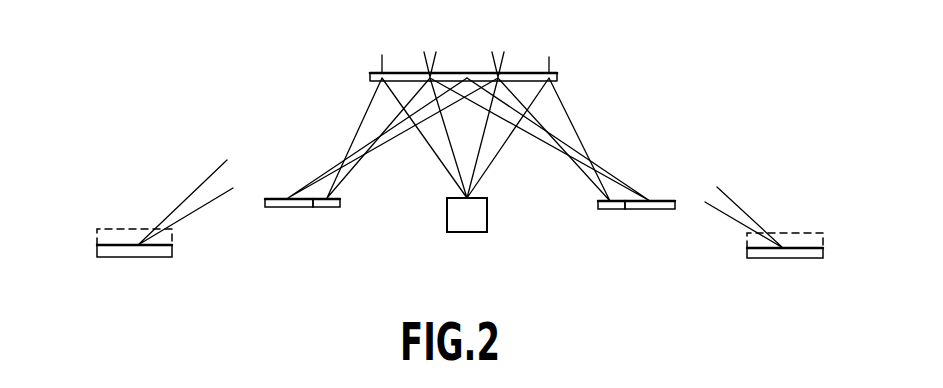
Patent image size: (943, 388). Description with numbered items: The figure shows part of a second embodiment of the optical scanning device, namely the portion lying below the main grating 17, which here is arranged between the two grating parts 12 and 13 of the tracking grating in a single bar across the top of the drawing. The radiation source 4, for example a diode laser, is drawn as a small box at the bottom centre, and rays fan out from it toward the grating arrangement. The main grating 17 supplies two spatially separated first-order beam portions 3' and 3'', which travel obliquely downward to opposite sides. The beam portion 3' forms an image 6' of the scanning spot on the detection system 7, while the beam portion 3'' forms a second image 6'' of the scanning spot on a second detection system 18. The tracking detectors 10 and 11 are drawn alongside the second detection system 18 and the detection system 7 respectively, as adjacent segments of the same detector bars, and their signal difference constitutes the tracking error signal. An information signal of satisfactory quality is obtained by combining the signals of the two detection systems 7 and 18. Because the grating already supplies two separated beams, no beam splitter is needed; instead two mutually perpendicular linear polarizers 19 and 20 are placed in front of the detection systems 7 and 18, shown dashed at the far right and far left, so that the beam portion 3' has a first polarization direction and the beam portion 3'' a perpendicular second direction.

The grating part 12 is at (402, 72).
The main grating 17 is at (468, 72).
The grating part 13 is at (529, 72).
The first-order beam portion 3'' is at (393, 138).
The first-order beam portion 3' is at (540, 139).
The image of the scanning spot 6'' is at (197, 195).
The image of the scanning spot 6' is at (727, 206).
The second detection system 18 is at (287, 208).
The tracking detector 10 is at (332, 208).
The linear polarizer 20 is at (97, 237).
The tracking detector 11 is at (612, 210).
The detection system 7 is at (650, 210).
The linear polarizer 19 is at (816, 242).
The radiation source 4 is at (473, 223).